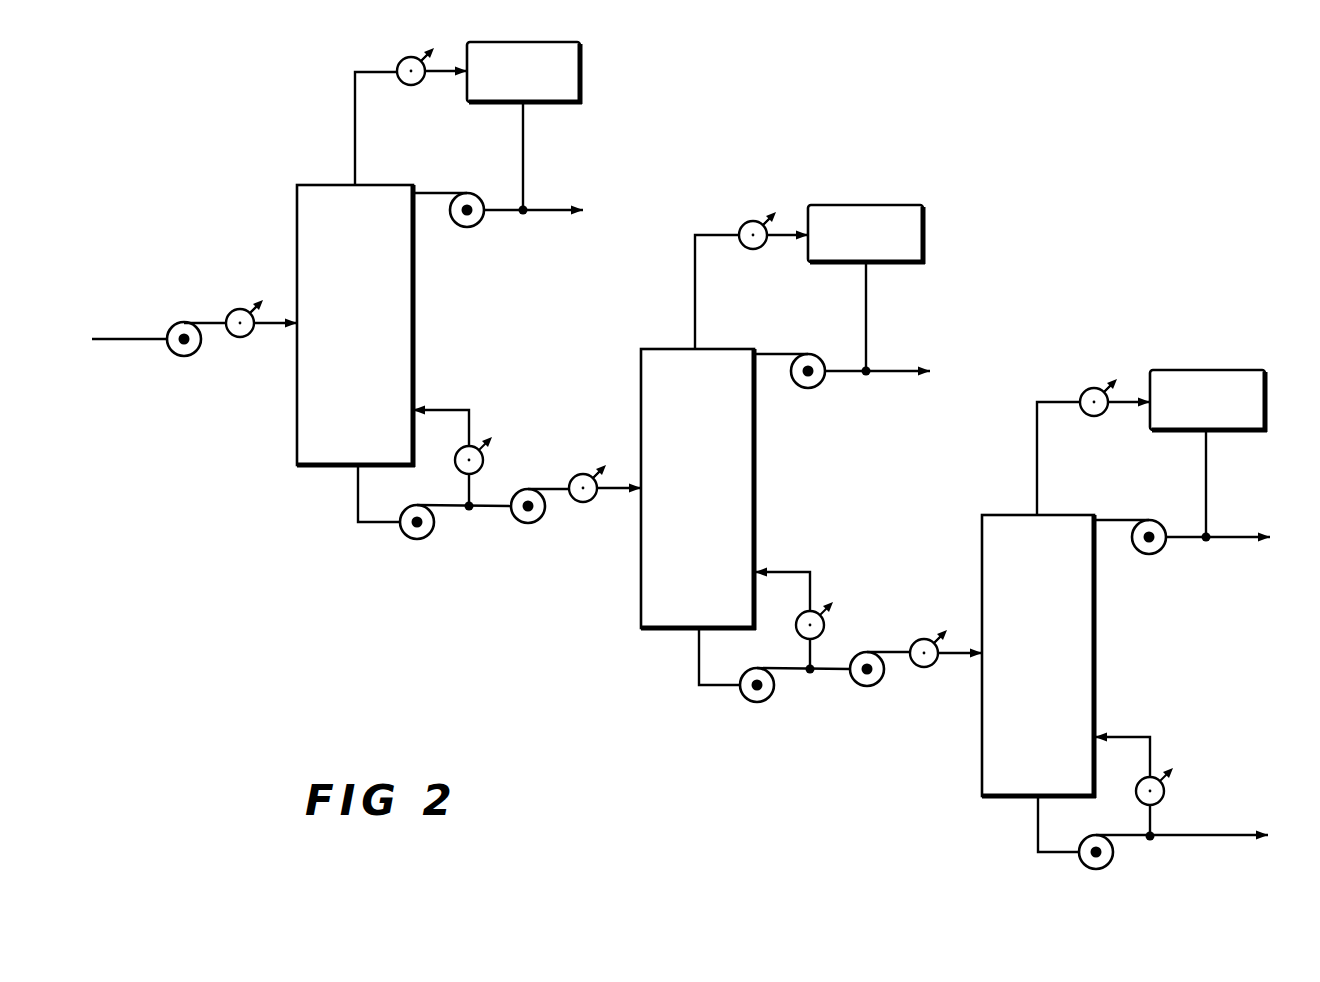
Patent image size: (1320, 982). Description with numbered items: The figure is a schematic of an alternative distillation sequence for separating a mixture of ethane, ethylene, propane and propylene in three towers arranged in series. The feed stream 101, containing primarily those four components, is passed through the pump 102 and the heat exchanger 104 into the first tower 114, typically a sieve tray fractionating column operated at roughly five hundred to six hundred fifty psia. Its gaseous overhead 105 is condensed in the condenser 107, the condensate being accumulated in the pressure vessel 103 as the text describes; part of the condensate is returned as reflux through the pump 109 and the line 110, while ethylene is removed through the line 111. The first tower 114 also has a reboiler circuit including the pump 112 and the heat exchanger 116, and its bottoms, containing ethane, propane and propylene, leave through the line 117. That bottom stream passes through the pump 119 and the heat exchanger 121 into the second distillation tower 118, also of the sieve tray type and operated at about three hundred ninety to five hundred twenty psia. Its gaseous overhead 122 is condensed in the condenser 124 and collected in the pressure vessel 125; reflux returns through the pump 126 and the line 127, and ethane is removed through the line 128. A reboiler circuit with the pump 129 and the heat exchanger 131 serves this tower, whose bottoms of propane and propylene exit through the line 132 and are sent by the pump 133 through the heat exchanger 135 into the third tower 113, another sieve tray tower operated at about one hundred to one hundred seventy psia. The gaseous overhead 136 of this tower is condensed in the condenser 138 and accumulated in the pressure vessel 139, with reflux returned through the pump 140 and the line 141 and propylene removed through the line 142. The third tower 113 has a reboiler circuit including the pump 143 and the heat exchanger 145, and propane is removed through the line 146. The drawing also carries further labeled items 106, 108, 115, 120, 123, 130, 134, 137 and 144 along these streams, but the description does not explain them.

The feed stream 101 is at (113, 342).
The pump 102 is at (190, 356).
The pressure vessel 103 is at (231, 337).
The heat exchanger 104 is at (244, 311).
The gaseous overhead 105 is at (355, 138).
The control valve 106 is at (404, 84).
The condenser 107 is at (420, 84).
The overhead condenser 108 is at (503, 83).
The pump 109 is at (472, 228).
The line 110 is at (436, 194).
The line 111 is at (555, 207).
The pump 112 is at (422, 540).
The third tower 113 is at (1017, 667).
The first tower 114 is at (334, 341).
The reflux line 115 is at (459, 482).
The heat exchanger 116 is at (482, 471).
The line 117 is at (485, 509).
The second distillation tower 118 is at (677, 500).
The pump 119 is at (539, 522).
The control valve 120 is at (569, 502).
The heat exchanger 121 is at (586, 475).
The gaseous overhead 122 is at (695, 308).
The control valve 123 is at (746, 249).
The condenser 124 is at (751, 220).
The pressure vessel 125 is at (846, 246).
The pump 126 is at (804, 389).
The line 127 is at (771, 355).
The line 128 is at (901, 371).
The pump 129 is at (760, 702).
The reflux line 130 is at (789, 644).
The heat exchanger 131 is at (824, 633).
The line 132 is at (830, 672).
The pump 133 is at (878, 684).
The control valve 134 is at (912, 665).
The heat exchanger 135 is at (931, 638).
The gaseous overhead 136 is at (1037, 488).
The control valve 137 is at (1086, 416).
The condenser 138 is at (1092, 388).
The pressure vessel 139 is at (1187, 411).
The pump 140 is at (1157, 553).
The line 141 is at (1110, 522).
The line 142 is at (1236, 538).
The pump 143 is at (1098, 870).
The reflux line 144 is at (1126, 812).
The heat exchanger 145 is at (1166, 797).
The line 146 is at (1202, 836).